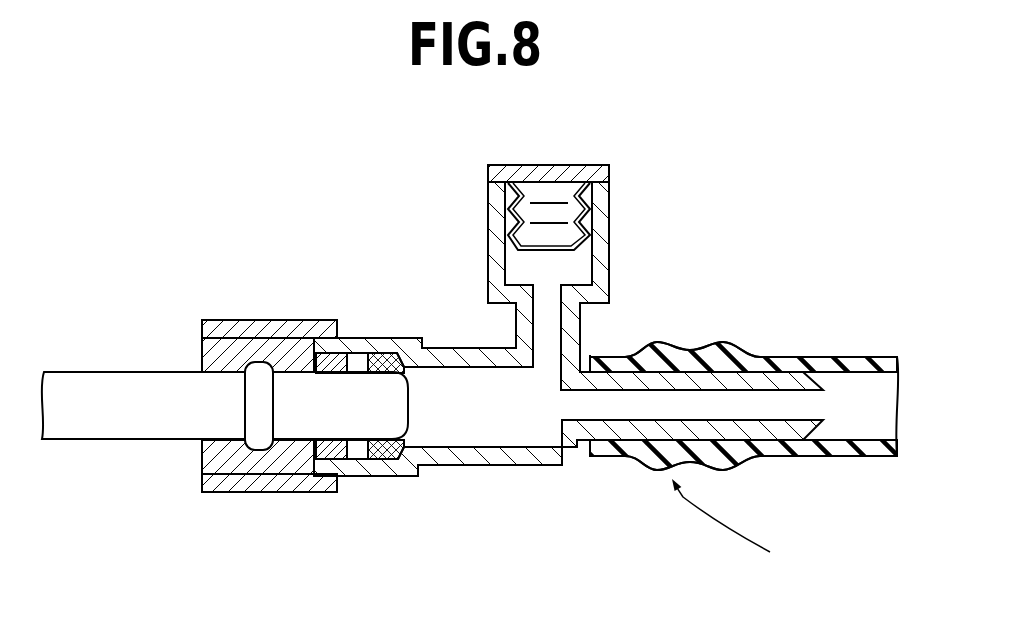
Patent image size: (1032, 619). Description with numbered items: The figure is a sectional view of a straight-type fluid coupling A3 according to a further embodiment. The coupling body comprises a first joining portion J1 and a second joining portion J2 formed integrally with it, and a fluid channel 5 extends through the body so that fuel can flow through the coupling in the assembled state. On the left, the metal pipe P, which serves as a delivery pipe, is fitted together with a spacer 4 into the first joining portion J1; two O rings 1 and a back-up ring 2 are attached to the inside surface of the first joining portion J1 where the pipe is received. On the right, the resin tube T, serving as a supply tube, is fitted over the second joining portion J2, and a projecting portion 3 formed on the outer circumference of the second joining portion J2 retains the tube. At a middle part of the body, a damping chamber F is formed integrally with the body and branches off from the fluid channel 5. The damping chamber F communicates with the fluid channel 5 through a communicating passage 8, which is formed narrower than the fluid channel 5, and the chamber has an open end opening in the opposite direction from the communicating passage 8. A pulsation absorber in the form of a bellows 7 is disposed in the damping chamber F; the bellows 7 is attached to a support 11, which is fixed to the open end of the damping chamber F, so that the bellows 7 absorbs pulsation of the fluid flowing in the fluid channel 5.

The O rings 1 is at (340, 462).
The back-up ring 2 is at (355, 352).
The projecting portion 3 is at (661, 360).
The spacer 4 is at (215, 358).
The fluid channel 5 is at (463, 414).
The bellows 7 is at (505, 218).
The communicating passage 8 is at (547, 336).
The support 11 is at (548, 166).
The damping chamber F is at (609, 213).
The first joining portion J1 is at (283, 328).
The second joining portion J2 is at (757, 370).
The metal pipe P is at (155, 434).
The resin tube T is at (848, 357).
The fluid coupling A3 is at (797, 585).